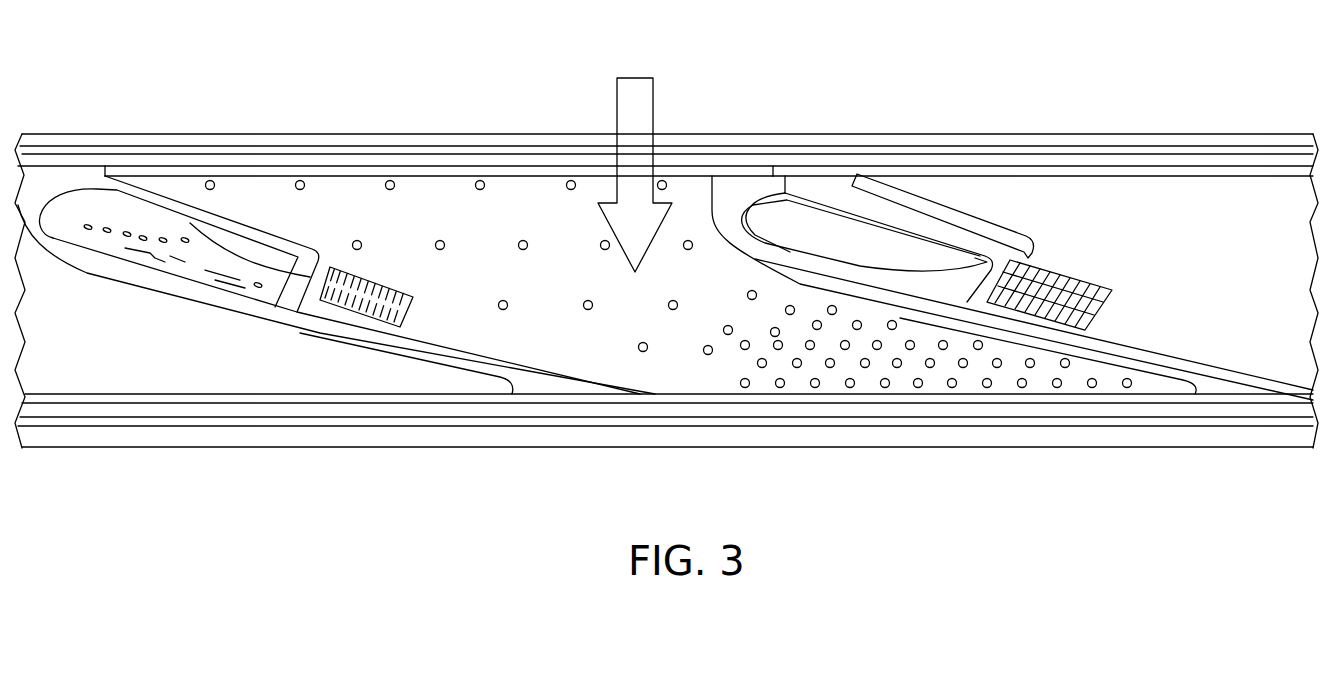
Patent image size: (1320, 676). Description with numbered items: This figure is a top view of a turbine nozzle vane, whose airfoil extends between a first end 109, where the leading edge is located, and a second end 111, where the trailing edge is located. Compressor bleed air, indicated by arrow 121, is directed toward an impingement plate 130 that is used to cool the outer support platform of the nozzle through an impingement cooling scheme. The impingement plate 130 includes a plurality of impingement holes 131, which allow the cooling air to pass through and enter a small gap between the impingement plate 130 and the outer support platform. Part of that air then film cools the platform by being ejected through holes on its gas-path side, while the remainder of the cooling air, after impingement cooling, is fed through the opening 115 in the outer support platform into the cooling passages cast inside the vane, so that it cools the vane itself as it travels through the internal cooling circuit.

The first end 109 is at (45, 178).
The second end 111 is at (1238, 375).
The opening 115 is at (368, 307).
The compressor bleed air arrow 121 is at (653, 103).
The impingement plate 130 is at (538, 218).
The impingement holes 131 is at (440, 240).